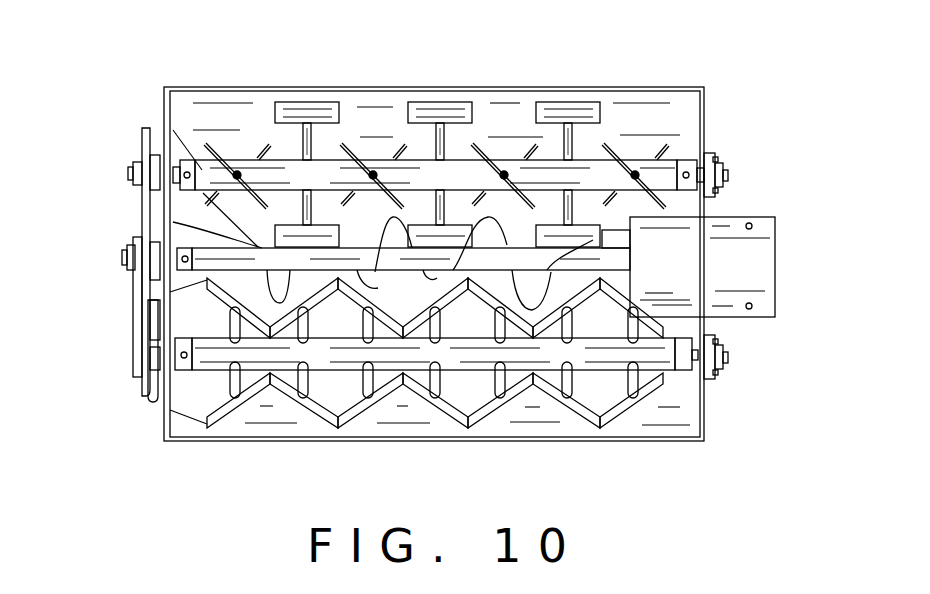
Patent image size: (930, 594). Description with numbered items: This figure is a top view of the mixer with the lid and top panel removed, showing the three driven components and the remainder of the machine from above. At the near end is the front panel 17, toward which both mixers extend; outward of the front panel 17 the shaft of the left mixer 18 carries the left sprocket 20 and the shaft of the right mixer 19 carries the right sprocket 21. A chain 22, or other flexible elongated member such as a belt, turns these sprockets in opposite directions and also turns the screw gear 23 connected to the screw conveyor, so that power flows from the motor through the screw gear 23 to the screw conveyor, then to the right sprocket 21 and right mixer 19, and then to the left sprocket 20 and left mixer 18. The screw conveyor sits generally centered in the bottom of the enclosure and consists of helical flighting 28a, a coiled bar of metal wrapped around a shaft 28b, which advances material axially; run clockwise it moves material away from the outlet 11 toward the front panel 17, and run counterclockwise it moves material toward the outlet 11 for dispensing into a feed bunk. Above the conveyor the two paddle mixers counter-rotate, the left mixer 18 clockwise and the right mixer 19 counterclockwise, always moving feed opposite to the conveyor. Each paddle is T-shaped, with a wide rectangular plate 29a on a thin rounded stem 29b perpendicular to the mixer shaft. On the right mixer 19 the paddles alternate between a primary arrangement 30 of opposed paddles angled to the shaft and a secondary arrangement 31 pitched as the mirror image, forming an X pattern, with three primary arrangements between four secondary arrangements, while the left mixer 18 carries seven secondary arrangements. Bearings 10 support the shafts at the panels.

The front panel 17 is at (164, 100).
The right mixer 19 is at (272, 170).
The plate 29a is at (440, 106).
The stem 29b is at (444, 142).
The primary arrangement 30 is at (335, 66).
The secondary arrangement 31 is at (415, 66).
The shaft 28b is at (610, 270).
The flighting 28a is at (530, 295).
The left mixer 18 is at (230, 350).
The bearing 10 is at (729, 170).
The outlet 11 is at (775, 283).
The left sprocket 20 is at (133, 348).
The right sprocket 21 is at (133, 172).
The chain 22 is at (142, 213).
The screw gear 23 is at (127, 257).